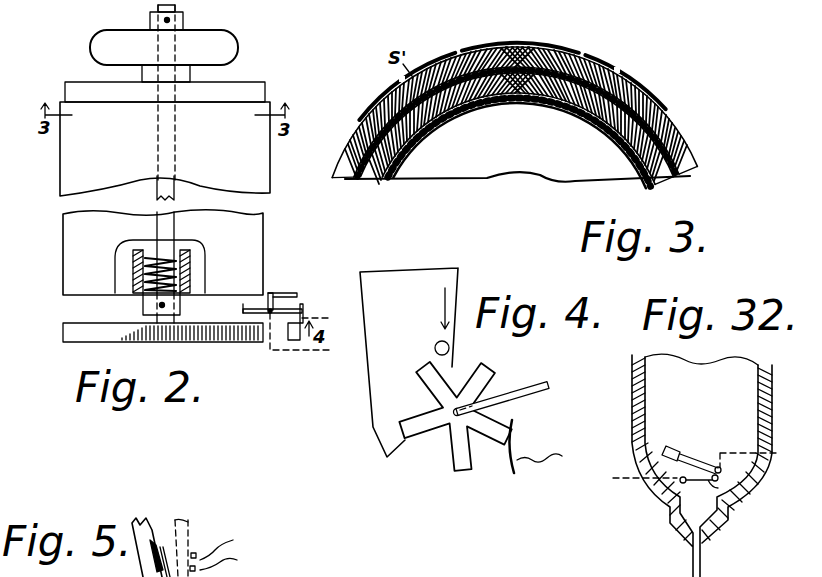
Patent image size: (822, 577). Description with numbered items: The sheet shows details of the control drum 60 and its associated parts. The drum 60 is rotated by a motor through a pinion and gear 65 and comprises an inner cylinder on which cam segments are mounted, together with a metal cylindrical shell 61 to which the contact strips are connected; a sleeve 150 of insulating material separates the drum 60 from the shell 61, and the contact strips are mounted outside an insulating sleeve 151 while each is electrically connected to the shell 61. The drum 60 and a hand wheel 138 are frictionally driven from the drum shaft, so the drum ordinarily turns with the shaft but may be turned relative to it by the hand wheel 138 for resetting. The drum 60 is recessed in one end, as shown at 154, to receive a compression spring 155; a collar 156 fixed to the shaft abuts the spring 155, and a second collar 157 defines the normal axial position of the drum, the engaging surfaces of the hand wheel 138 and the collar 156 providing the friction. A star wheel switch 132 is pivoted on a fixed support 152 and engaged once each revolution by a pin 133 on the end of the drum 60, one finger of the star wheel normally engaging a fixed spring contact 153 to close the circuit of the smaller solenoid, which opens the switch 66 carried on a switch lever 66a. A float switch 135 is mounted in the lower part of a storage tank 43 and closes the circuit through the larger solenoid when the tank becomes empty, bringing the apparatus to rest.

In FIG. 2, the second collar 157 is at (150, 17).
In FIG. 2, the hand wheel 138 is at (222, 53).
In FIG. 2, the control drum 60 is at (63, 244).
In FIG. 3, the control drum 60 is at (472, 108).
In FIG. 4, the control drum 60 is at (418, 272).
In FIG. 2, the compression spring 155 is at (176, 256).
In FIG. 2, the recess 154 is at (182, 278).
In FIG. 2, the collar 156 is at (180, 306).
In FIG. 2, the gear 65 is at (70, 329).
In FIG. 2, the pin 133 is at (247, 306).
In FIG. 4, the pin 133 is at (435, 350).
In FIG. 2, the fixed support 152 is at (277, 288).
In FIG. 4, the fixed support 152 is at (528, 390).
In FIG. 2, the star wheel switch 132 is at (298, 306).
In FIG. 4, the star wheel switch 132 is at (458, 458).
In FIG. 3, the insulating sleeve 151 is at (682, 142).
In FIG. 3, the insulating sleeve 150 is at (668, 178).
In FIG. 3, the metal cylindrical shell 61 is at (362, 178).
In FIG. 4, the fixed spring contact 153 is at (525, 445).
In FIG. 32, the vessel 43 is at (750, 488).
In FIG. 32, the float switch 135 is at (688, 447).
In FIG. 5, the switch lever 66a is at (147, 535).
In FIG. 5, the switch 66 is at (165, 550).